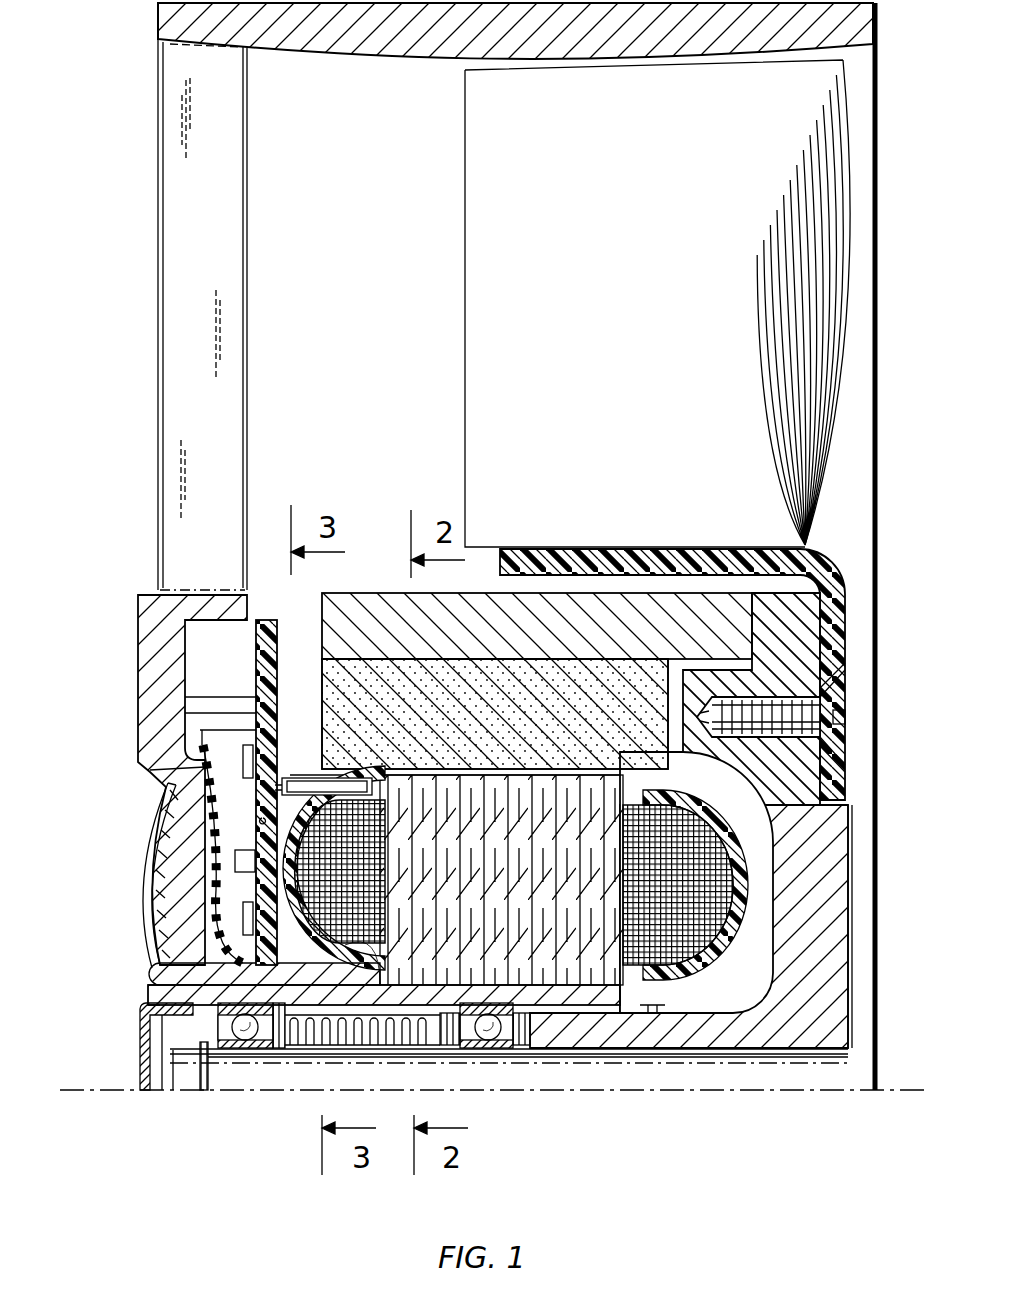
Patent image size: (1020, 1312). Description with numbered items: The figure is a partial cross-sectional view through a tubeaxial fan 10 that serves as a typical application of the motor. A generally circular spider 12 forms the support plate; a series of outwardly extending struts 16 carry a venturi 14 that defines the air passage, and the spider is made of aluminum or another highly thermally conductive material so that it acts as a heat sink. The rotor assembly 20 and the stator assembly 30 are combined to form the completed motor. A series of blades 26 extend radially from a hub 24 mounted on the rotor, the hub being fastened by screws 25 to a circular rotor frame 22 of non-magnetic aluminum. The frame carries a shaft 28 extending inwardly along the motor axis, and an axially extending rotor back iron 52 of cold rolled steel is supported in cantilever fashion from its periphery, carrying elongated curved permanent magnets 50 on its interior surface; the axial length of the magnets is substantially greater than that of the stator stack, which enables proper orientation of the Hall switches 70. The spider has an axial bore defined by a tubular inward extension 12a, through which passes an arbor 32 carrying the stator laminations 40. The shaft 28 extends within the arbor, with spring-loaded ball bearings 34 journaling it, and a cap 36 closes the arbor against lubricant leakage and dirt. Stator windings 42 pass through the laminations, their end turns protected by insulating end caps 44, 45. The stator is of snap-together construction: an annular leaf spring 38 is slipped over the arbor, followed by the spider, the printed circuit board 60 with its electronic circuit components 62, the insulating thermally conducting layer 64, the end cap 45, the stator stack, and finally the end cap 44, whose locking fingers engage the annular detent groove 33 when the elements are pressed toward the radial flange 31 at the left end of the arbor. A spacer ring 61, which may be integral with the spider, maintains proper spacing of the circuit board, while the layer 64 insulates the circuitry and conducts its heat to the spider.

The fan 10 is at (140, 257).
The spider 12 is at (138, 605).
The tubular inward extension 12a is at (365, 975).
The venturi 14 is at (158, 22).
The struts 16 is at (158, 375).
The rotor assembly 20 is at (858, 832).
The rotor frame 22 is at (850, 948).
The hub 24 is at (838, 598).
The screws 25 is at (840, 696).
The blades 26 is at (852, 345).
The shaft 28 is at (812, 1088).
The stator assembly 30 is at (138, 832).
The radial flange 31 is at (150, 975).
The arbor 32 is at (148, 990).
The annular detent groove 33 is at (655, 1005).
The bearings 34 is at (285, 1050).
The cap 36 is at (140, 1055).
The annular leaf spring 38 is at (150, 920).
The stator laminations 40 is at (536, 896).
The stator windings 42 is at (370, 843).
The insulating end cap 44 is at (730, 930).
The insulating end cap 45 is at (382, 930).
The permanent magnets 50 is at (322, 692).
The rotor back iron 52 is at (395, 612).
The printed circuit board 60 is at (262, 660).
The spacer ring 61 is at (237, 700).
The electronic circuit components 62 is at (245, 760).
The electrically insulating, thermally conducting layer 64 is at (205, 785).
The Hall switches 70 is at (300, 790).